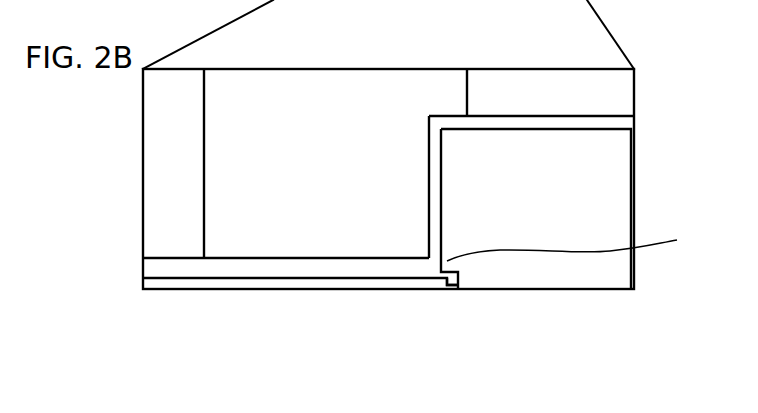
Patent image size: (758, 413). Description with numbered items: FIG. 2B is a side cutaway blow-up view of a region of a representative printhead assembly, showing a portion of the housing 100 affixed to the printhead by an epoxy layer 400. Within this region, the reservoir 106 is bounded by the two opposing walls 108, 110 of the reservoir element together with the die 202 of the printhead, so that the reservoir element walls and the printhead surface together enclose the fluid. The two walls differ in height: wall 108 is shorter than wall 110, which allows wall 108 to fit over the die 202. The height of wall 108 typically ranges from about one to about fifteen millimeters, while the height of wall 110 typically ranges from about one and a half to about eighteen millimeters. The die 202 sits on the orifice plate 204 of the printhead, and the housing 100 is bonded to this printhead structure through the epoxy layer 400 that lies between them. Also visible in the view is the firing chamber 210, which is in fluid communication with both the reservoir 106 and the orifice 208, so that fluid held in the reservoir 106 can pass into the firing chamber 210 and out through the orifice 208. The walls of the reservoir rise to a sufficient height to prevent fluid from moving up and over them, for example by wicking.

The housing 100 is at (170, 157).
The reservoir 106 is at (342, 214).
The wall 108 is at (438, 93).
The wall 110 is at (212, 156).
The die 202 is at (559, 196).
The orifice plate 204 is at (262, 278).
The orifice 208 is at (458, 289).
The firing chamber 210 is at (582, 239).
The epoxy layer 400 is at (230, 270).